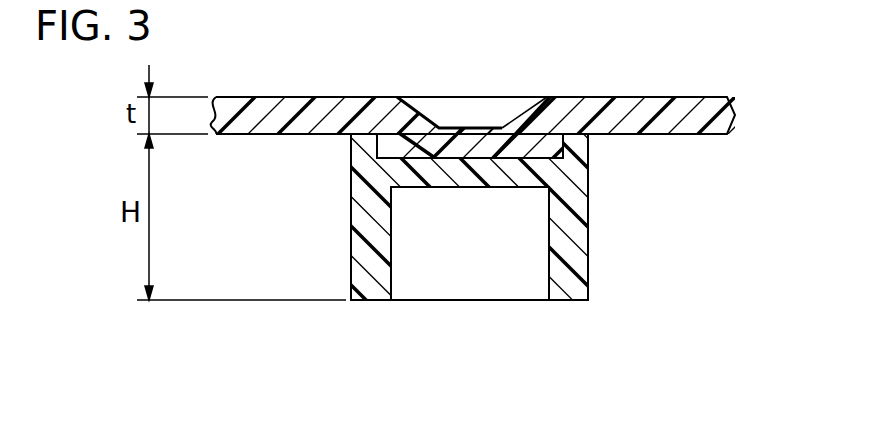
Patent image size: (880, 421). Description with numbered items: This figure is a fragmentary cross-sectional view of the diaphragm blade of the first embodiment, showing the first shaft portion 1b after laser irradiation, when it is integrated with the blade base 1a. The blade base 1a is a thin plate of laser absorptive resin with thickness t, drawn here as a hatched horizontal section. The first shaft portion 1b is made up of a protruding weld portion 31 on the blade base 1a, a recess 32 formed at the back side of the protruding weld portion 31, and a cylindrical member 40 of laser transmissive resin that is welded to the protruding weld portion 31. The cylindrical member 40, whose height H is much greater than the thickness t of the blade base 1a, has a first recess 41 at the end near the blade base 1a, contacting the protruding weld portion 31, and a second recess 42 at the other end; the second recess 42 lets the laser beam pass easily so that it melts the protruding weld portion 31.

The blade base 1a is at (266, 96).
The first shaft portion 1b is at (331, 237).
The protruding weld portion 31 is at (471, 136).
The recess 32 is at (444, 113).
The cylindrical member 40 is at (381, 282).
The first recess 41 is at (543, 142).
The second recess 42 is at (532, 265).